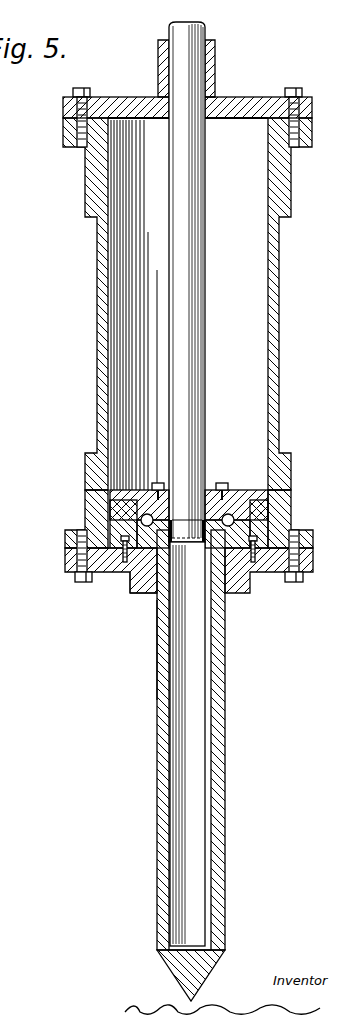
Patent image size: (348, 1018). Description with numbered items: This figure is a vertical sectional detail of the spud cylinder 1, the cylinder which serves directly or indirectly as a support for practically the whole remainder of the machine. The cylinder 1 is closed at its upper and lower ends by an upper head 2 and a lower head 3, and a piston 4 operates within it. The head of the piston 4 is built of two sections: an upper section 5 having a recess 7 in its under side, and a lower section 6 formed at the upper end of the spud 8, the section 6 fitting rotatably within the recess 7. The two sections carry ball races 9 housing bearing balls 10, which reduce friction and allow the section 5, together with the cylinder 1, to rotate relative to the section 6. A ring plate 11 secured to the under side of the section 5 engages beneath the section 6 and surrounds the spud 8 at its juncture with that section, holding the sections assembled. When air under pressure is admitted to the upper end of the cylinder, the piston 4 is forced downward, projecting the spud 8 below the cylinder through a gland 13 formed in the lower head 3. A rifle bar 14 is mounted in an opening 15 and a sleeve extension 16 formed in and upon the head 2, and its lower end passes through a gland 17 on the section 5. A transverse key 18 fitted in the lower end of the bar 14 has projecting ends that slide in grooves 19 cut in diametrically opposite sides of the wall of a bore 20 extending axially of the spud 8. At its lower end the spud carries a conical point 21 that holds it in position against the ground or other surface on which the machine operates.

The spud cylinder 1 is at (284, 328).
The upper head 2 is at (250, 98).
The lower head 3 is at (275, 572).
The piston 4 is at (251, 483).
The upper section of piston head 5 is at (112, 493).
The lower section of piston head 6 is at (133, 573).
The recess 7 is at (146, 490).
The spud 8 is at (226, 662).
The ball races 9 is at (232, 492).
The bearing balls 10 is at (88, 514).
The ring plate 11 is at (232, 556).
The gland 13 is at (152, 593).
The rifle bar 14 is at (206, 229).
The opening 15 is at (217, 98).
The sleeve extension 16 is at (215, 50).
The gland 17 is at (172, 500).
The transverse key 18 is at (270, 522).
The grooves 19 is at (160, 637).
The bore 20 is at (193, 715).
The conical point 21 is at (180, 970).